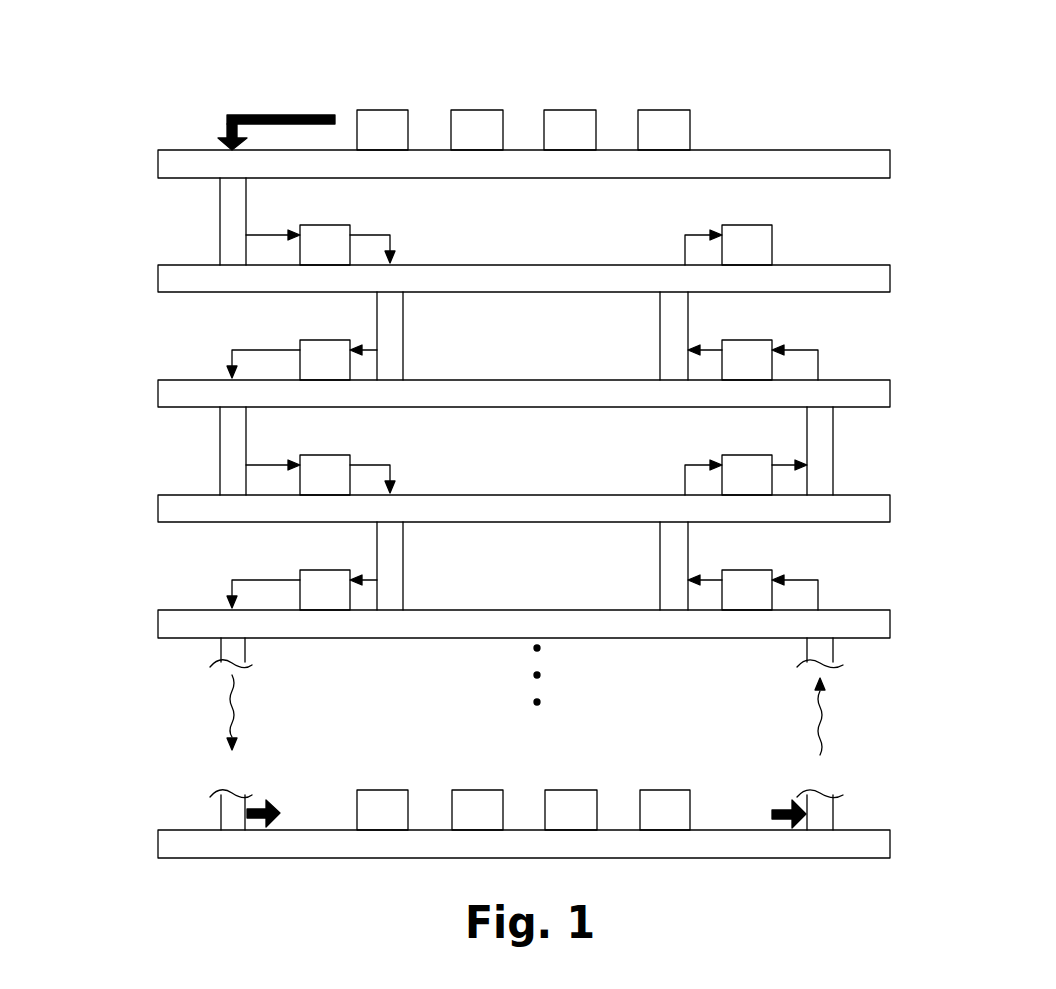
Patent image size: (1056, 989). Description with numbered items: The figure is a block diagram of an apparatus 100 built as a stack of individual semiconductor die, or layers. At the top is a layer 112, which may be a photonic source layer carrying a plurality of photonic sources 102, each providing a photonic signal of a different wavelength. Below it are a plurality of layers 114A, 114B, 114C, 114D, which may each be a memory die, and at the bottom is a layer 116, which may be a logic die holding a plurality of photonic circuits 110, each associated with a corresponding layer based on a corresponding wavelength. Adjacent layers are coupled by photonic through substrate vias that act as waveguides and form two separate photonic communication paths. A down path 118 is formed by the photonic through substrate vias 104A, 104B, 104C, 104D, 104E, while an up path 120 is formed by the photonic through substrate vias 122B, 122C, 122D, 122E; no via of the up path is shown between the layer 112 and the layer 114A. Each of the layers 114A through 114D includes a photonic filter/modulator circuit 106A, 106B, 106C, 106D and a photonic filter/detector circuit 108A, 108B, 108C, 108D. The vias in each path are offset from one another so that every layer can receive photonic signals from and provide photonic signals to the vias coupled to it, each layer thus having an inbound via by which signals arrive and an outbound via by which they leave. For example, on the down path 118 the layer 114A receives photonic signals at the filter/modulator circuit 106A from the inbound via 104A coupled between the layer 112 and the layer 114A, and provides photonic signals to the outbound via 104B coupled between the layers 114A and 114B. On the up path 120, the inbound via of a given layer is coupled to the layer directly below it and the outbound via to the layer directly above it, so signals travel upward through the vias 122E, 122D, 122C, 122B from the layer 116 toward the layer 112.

The apparatus 100 is at (973, 77).
The photonic sources 102 is at (690, 97).
The photonic through substrate via 104A is at (220, 220).
The photonic through substrate via 104B is at (403, 328).
The photonic through substrate via 104C is at (220, 450).
The photonic through substrate via 104D is at (403, 560).
The photonic through substrate via 104E is at (221, 648).
The photonic filter/modulator circuit 106A is at (349, 225).
The photonic filter/modulator circuit 106B is at (300, 340).
The photonic filter/modulator circuit 106C is at (349, 455).
The photonic filter/modulator circuit 106D is at (300, 570).
The photonic filter/detector circuit 108A is at (772, 225).
The photonic filter/detector circuit 108B is at (772, 340).
The photonic filter/detector circuit 108C is at (722, 455).
The photonic filter/detector circuit 108D is at (772, 570).
The photonic circuits 110 is at (690, 772).
The layer 112 is at (552, 165).
The layer 114A is at (560, 280).
The layer 114B is at (560, 395).
The layer 114C is at (560, 510).
The layer 114D is at (560, 625).
The layer 116 is at (551, 845).
The down path 118 is at (232, 92).
The up path 120 is at (822, 876).
The photonic through substrate via 122B is at (660, 338).
The photonic through substrate via 122C is at (833, 445).
The photonic through substrate via 122D is at (660, 570).
The photonic through substrate via 122E is at (833, 650).